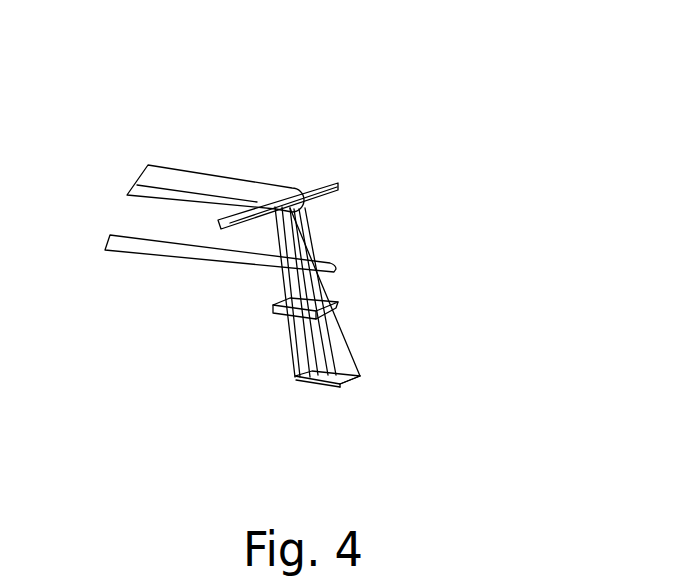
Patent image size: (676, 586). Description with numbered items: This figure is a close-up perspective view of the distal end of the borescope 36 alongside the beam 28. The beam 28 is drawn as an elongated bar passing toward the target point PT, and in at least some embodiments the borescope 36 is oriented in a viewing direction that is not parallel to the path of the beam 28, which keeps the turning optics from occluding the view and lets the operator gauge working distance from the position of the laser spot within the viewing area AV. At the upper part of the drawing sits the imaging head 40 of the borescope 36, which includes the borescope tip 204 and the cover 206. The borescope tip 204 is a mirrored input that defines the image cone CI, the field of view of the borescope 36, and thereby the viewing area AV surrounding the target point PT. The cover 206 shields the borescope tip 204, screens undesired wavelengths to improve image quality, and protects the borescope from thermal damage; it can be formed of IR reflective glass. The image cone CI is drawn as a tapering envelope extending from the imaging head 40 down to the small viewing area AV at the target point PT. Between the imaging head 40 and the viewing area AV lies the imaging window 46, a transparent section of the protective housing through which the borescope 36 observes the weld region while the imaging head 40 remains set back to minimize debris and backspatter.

The borescope 36 is at (230, 115).
The borescope tip 204 is at (262, 185).
The imaging head 40 is at (337, 293).
The cover 206 is at (340, 188).
The beam 28 is at (162, 245).
The imaging window 46 is at (337, 303).
The image cone CI is at (348, 342).
The viewing area AV is at (341, 383).
The target point PT is at (328, 385).